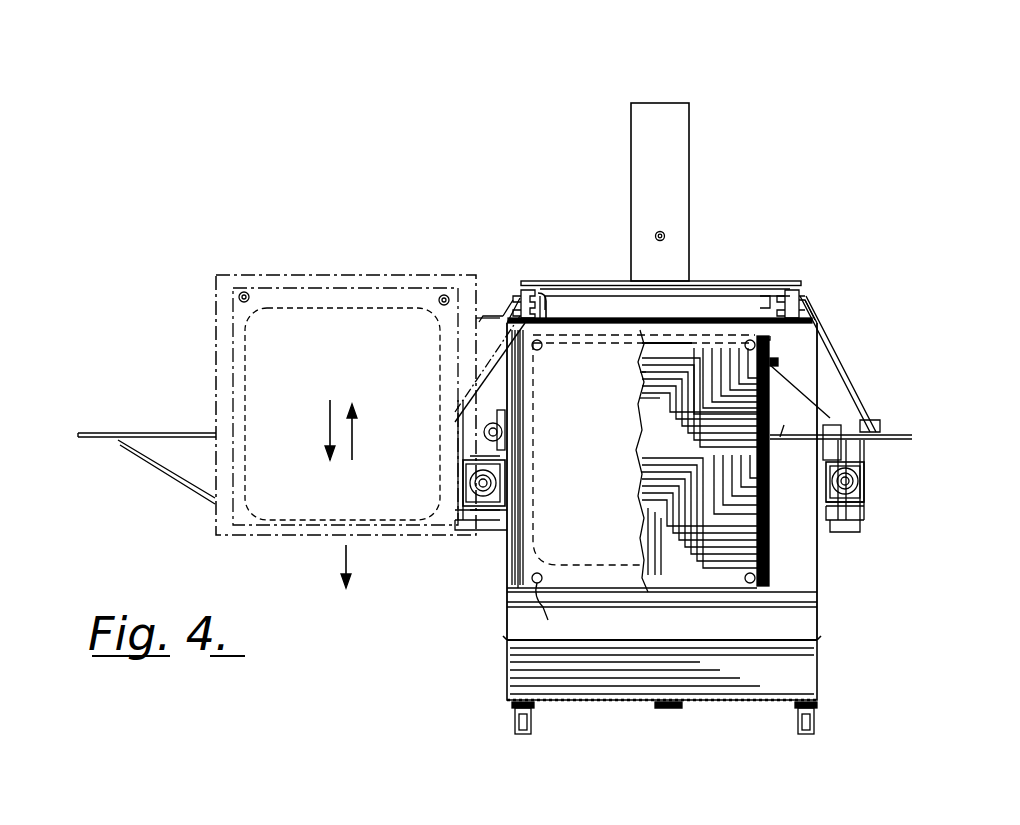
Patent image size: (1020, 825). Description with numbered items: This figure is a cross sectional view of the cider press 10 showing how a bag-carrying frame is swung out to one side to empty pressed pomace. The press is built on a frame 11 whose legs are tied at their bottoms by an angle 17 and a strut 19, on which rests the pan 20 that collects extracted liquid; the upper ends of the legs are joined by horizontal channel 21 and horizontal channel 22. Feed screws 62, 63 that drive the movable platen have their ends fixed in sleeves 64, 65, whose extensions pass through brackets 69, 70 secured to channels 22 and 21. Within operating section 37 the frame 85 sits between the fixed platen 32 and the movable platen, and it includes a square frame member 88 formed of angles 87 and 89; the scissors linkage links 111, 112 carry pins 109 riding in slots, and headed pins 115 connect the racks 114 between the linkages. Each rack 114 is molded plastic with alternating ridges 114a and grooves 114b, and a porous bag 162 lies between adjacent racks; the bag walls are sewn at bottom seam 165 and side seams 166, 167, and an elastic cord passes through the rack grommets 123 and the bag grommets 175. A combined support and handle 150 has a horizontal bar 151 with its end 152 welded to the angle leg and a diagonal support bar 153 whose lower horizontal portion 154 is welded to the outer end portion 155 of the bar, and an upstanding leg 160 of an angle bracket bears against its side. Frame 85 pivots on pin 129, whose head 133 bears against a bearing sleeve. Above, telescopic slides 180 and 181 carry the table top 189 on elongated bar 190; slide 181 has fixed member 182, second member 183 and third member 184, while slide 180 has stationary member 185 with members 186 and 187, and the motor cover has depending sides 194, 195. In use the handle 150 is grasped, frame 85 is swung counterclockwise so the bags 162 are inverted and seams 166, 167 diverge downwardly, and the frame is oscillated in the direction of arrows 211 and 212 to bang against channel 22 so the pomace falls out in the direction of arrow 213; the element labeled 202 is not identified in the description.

The cider press 10 is at (805, 135).
The chimney 202 is at (689, 165).
The elongated bar 190 is at (705, 281).
The table top 189 is at (668, 288).
The third slide member 187 is at (544, 302).
The second slide member 186 is at (531, 290).
The telescopic slide 180 is at (518, 296).
The stationary slide member 185 is at (505, 304).
The operating section 37 is at (578, 318).
The third slide member 184 is at (760, 300).
The second slide member 183 is at (790, 290).
The telescopic slide 181 is at (806, 296).
The fixed slide member 182 is at (810, 300).
The fixed platen 32 is at (812, 338).
The headed pin 115 is at (806, 325).
The elongated link 111 is at (525, 402).
The elongated link 112 is at (522, 385).
The rack grommet 123 is at (745, 340).
The porous bag 162 is at (606, 471).
The bottom seam 165 is at (612, 561).
The rack 114 is at (688, 345).
The ridge 114a is at (646, 374).
The groove 114b is at (662, 400).
The side seam 166 is at (532, 433).
The bag grommet 175 is at (548, 623).
The angle 87 is at (770, 342).
The pin 109 is at (778, 366).
The end of horizontal bar 152 is at (795, 420).
The horizontal bar 151 is at (788, 442).
The upstanding leg 160 is at (832, 425).
The combined support and handle 150 is at (826, 372).
The motor cover side 195 is at (862, 350).
The diagonal support bar 153 is at (866, 420).
The lower horizontal portion 154 is at (886, 432).
The outer end portion 155 is at (866, 445).
The sleeve 65 is at (858, 481).
The feed screw 63 is at (855, 488).
The bracket 70 is at (850, 505).
The frame 11 is at (858, 520).
The horizontal channel 21 is at (842, 530).
The pan 20 is at (508, 668).
The angle 17 is at (590, 704).
The strut 19 is at (680, 706).
The frame 85 is at (290, 275).
The side seam 167 is at (240, 395).
The arrow 211 is at (330, 430).
The arrow 212 is at (350, 452).
The arrow 213 is at (346, 556).
The motor cover side 194 is at (500, 326).
The angle 89 is at (500, 368).
The square frame member 88 is at (500, 386).
The pin 129 is at (483, 420).
The head 133 is at (497, 445).
The sleeve 64 is at (463, 464).
The feed screw 62 is at (470, 484).
The bracket 69 is at (466, 500).
The horizontal channel 22 is at (480, 520).